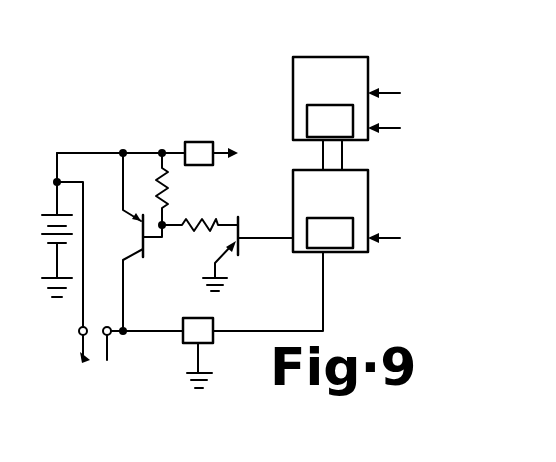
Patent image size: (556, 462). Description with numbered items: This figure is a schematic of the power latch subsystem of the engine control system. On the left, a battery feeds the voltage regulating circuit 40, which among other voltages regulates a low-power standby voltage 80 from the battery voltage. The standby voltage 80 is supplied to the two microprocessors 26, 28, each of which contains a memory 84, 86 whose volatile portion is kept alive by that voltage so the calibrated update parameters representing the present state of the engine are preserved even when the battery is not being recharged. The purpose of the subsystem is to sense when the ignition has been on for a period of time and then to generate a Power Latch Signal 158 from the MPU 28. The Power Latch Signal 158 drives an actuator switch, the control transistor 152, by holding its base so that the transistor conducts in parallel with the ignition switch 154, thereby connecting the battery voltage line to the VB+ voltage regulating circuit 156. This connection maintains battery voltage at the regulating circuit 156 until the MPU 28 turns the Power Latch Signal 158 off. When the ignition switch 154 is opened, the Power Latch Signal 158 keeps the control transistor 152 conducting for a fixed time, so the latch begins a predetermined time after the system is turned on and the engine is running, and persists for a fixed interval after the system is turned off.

The microprocessor 26 is at (322, 57).
The microprocessor (MPU) 28 is at (368, 207).
The voltage regulating circuit 40 is at (105, 139).
The standby voltage 80 is at (220, 150).
The memory 84 is at (353, 138).
The memory 86 is at (340, 252).
The control transistor 152 is at (233, 238).
The ignition switch 154 is at (108, 340).
The VB+ voltage regulating circuit 156 is at (202, 345).
The Power Latch Signal 158 is at (264, 240).